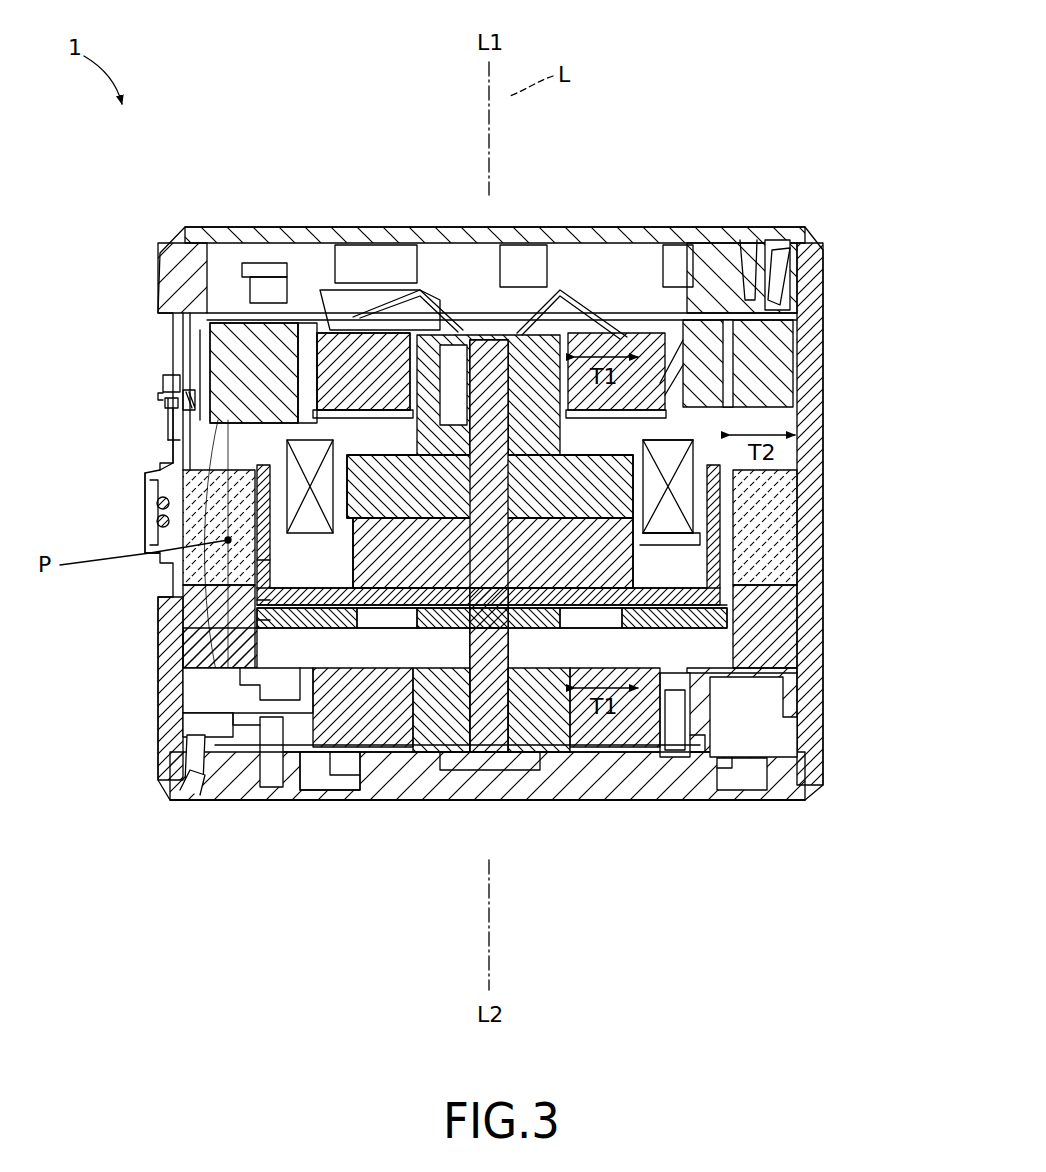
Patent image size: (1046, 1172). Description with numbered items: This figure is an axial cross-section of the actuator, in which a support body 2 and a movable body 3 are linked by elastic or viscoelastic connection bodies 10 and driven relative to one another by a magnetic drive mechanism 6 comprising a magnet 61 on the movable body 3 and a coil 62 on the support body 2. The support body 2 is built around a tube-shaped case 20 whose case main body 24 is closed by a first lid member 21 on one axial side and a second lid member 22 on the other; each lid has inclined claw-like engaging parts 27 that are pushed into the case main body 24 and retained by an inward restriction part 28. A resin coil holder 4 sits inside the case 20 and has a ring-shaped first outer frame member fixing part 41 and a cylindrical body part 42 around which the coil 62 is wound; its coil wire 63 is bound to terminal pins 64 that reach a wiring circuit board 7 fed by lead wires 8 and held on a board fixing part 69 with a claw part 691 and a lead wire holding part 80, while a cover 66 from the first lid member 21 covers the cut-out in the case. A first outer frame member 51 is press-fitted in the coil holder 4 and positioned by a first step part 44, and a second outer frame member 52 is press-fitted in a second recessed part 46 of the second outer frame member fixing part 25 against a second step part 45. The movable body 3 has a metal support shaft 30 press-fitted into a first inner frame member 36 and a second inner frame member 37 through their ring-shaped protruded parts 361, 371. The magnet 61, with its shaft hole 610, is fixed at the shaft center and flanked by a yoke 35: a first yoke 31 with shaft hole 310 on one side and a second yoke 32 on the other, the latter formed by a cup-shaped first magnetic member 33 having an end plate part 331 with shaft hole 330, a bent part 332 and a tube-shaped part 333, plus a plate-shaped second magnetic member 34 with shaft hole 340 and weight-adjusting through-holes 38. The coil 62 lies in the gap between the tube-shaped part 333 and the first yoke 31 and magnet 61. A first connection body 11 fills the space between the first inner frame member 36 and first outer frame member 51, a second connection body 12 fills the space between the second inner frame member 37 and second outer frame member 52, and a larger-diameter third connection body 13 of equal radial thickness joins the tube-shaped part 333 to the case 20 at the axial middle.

The support body 2 is at (840, 328).
The movable body 3 is at (245, 630).
The coil holder 4 is at (215, 330).
The magnetic drive mechanism 6 is at (868, 540).
The wiring circuit board 7 is at (172, 430).
The lead wires 8 is at (157, 522).
The connection body 10 is at (363, 371).
The first connection body 11 is at (365, 345).
The second connection body 12 is at (336, 740).
The third connection body 13 is at (775, 483).
The case 20 is at (156, 758).
The first lid member 21 is at (230, 214).
The second lid member 22 is at (385, 805).
The case main body 24 is at (192, 765).
The second outer frame member fixing part 25 is at (300, 690).
The engaging part 27 is at (795, 262).
The restriction part 28 is at (795, 270).
The support shaft 30 is at (495, 400).
The first yoke 31 is at (520, 478).
The second yoke 32 is at (878, 608).
The first magnetic member 33 is at (700, 600).
The second magnetic member 34 is at (720, 622).
The yoke 35 is at (916, 508).
The first inner frame member 36 is at (413, 300).
The second inner frame member 37 is at (422, 752).
The through-hole 38 is at (380, 628).
The first outer frame member fixing part 41 is at (250, 355).
The body part 42 is at (232, 578).
The first step part 44 is at (660, 383).
The second step part 45 is at (305, 716).
The second recessed part 46 is at (700, 735).
The first outer frame member 51 is at (293, 240).
The second outer frame member 52 is at (312, 790).
The magnet 61 is at (640, 568).
The coil 62 is at (690, 505).
The coil wire 63 is at (175, 385).
The terminal pins 64 is at (166, 402).
The cover 66 is at (172, 335).
The board fixing part 69 is at (168, 462).
The lead wire holding part 80 is at (150, 485).
The shaft hole 310 is at (505, 478).
The shaft hole 330 is at (492, 560).
The end plate part 331 is at (290, 600).
The bent part 332 is at (290, 620).
The tube-shaped part 333 is at (262, 565).
The shaft hole 340 is at (492, 630).
The ring-shaped protruded part 361 is at (458, 330).
The ring-shaped protruded part 371 is at (465, 770).
The shaft hole 610 is at (508, 545).
The claw part 691 is at (162, 394).